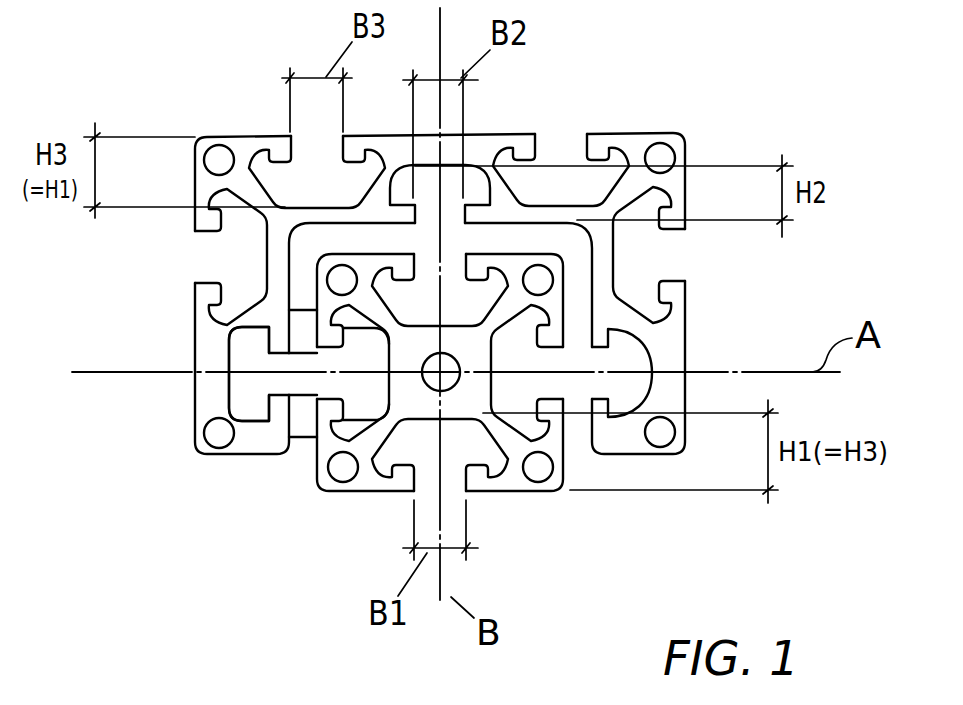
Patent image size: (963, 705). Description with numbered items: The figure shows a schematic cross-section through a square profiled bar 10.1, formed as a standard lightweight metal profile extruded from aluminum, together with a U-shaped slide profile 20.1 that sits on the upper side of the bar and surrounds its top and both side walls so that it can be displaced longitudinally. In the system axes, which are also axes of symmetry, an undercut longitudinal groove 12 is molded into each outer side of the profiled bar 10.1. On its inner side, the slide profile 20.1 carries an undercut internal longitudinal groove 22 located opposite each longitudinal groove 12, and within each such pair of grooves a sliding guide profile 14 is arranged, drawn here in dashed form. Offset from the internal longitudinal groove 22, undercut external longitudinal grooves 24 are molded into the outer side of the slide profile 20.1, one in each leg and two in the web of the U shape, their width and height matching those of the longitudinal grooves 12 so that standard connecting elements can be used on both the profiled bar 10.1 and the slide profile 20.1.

The profiled bar 10.1 is at (560, 494).
The slide profile 20.1 is at (686, 135).
The longitudinal groove 12 is at (486, 296).
The internal longitudinal groove 22 is at (399, 203).
The external longitudinal groove 24 is at (286, 186).
The sliding guide profile 14 is at (295, 393).